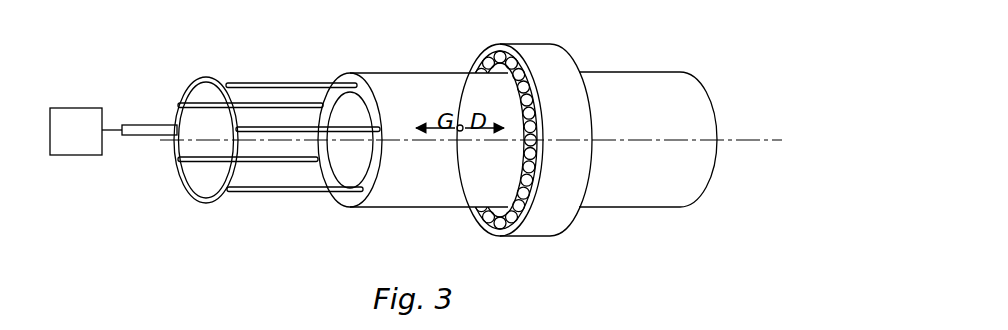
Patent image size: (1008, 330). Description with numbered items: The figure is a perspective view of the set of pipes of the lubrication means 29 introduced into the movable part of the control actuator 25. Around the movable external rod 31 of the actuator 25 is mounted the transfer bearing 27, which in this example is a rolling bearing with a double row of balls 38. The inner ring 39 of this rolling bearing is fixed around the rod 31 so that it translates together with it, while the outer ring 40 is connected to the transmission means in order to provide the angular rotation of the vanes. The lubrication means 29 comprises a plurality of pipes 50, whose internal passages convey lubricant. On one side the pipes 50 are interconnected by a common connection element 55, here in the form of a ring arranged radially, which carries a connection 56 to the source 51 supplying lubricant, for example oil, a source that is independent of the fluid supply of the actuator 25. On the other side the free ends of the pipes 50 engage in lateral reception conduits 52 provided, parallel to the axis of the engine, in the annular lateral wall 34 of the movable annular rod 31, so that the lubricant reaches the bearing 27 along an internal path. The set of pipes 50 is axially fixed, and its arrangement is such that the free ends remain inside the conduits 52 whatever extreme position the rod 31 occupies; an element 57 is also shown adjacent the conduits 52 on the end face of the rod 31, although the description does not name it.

The control actuator 25 is at (662, 140).
The transfer bearing 27 is at (511, 139).
The lubrication means 29 is at (279, 126).
The movable external rod 31 is at (665, 208).
The annular lateral wall 34 is at (432, 188).
The balls 38 is at (469, 118).
The inner ring 39 is at (495, 74).
The outer ring 40 is at (558, 63).
The pipes 50 is at (243, 161).
The lubricant supply source 51 is at (90, 150).
The conduits 52 is at (377, 194).
The common connection element 55 is at (182, 177).
The connection 56 is at (143, 128).
The end disc 57 is at (333, 195).